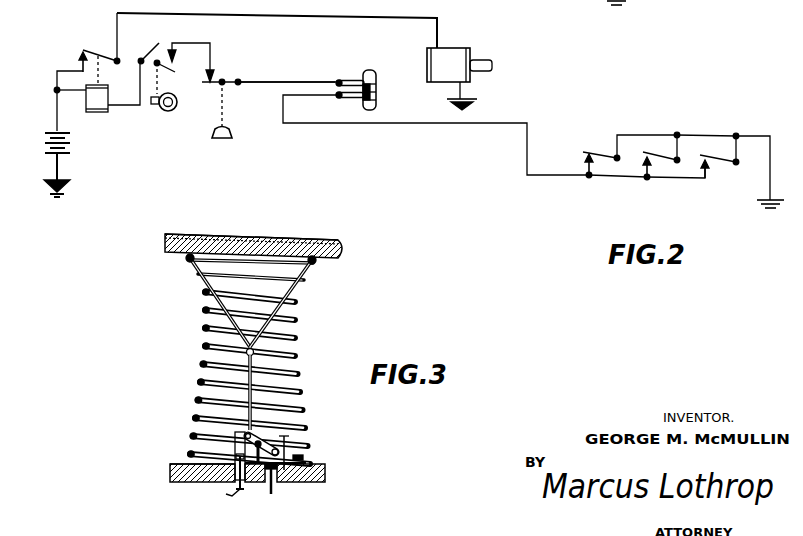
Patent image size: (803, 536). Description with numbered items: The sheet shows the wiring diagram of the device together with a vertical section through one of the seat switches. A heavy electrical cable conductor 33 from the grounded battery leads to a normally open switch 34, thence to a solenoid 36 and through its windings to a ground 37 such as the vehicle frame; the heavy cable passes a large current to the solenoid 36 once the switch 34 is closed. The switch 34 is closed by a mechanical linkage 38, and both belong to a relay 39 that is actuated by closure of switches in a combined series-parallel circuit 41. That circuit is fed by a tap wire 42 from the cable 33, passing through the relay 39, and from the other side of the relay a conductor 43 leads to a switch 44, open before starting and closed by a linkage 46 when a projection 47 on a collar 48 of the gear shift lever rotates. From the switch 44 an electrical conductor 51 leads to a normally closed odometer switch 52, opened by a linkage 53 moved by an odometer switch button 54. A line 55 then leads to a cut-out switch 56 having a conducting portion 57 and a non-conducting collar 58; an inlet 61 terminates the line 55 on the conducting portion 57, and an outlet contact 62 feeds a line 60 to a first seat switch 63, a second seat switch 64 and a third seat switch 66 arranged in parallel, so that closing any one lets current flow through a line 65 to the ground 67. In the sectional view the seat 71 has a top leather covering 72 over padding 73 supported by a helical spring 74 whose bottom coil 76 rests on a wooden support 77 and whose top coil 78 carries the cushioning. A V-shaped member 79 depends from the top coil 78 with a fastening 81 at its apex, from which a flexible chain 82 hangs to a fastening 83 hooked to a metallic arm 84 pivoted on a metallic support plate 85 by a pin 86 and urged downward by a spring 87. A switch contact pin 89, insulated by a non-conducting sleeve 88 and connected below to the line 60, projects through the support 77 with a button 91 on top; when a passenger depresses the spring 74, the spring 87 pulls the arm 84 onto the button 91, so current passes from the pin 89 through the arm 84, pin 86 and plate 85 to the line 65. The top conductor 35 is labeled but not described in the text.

In FIG. 2, the heavy electrical cable conductor 33 is at (57, 107).
In FIG. 2, the normally open switch 34 is at (96, 47).
In FIG. 2, the conductor 35 is at (283, 17).
In FIG. 2, the solenoid 36 is at (468, 47).
In FIG. 2, the ground 37 is at (477, 106).
In FIG. 2, the mechanical linkage 38 is at (103, 75).
In FIG. 2, the relay 39 is at (95, 114).
In FIG. 2, the combined series-parallel circuit 41 is at (298, 134).
In FIG. 2, the tap wire 42 is at (70, 97).
In FIG. 2, the conductor 43 is at (125, 108).
In FIG. 2, the switch 44 is at (158, 46).
In FIG. 2, the linkage 46 is at (168, 78).
In FIG. 2, the projection 47 is at (155, 108).
In FIG. 2, the collar 48 is at (172, 110).
In FIG. 2, the electrical conductor 51 is at (214, 45).
In FIG. 2, the odometer switch 52 is at (240, 78).
In FIG. 2, the linkage 53 is at (228, 106).
In FIG. 2, the odometer switch button 54 is at (233, 130).
In FIG. 2, the line 55 is at (295, 80).
In FIG. 2, the cut-out switch 56 is at (378, 78).
In FIG. 2, the conducting portion 57 is at (377, 90).
In FIG. 2, the non-conducting collar 58 is at (377, 100).
In FIG. 2, the line 60 is at (355, 126).
In FIG. 3, the line 60 is at (226, 494).
In FIG. 2, the inlet 61 is at (355, 78).
In FIG. 2, the outlet contact 62 is at (352, 99).
In FIG. 2, the first seat switch 63 is at (606, 150).
In FIG. 2, the second seat switch 64 is at (665, 145).
In FIG. 2, the line 65 is at (774, 150).
In FIG. 3, the line 65 is at (276, 494).
In FIG. 2, the third seat switch 66 is at (714, 150).
In FIG. 3, the third seat switch 66 is at (318, 339).
In FIG. 2, the ground 67 is at (784, 184).
In FIG. 3, the seat 71 is at (332, 247).
In FIG. 3, the top leather covering 72 is at (260, 240).
In FIG. 3, the padding 73 is at (280, 242).
In FIG. 3, the spring 74 is at (200, 275).
In FIG. 3, the bottom coil 76 is at (190, 464).
In FIG. 3, the support 77 is at (180, 482).
In FIG. 3, the top coil 78 is at (185, 259).
In FIG. 3, the V-shaped member 79 is at (300, 290).
In FIG. 3, the fastening 81 is at (256, 352).
In FIG. 3, the flexible chain 82 is at (255, 382).
In FIG. 3, the fastening 83 is at (258, 430).
In FIG. 3, the metallic arm 84 is at (288, 450).
In FIG. 3, the metallic support plate 85 is at (285, 438).
In FIG. 3, the pin 86 is at (305, 458).
In FIG. 3, the spring 87 is at (308, 464).
In FIG. 3, the non-conducting sleeve 88 is at (244, 489).
In FIG. 3, the switch contact pin 89 is at (238, 480).
In FIG. 3, the button 91 is at (238, 440).